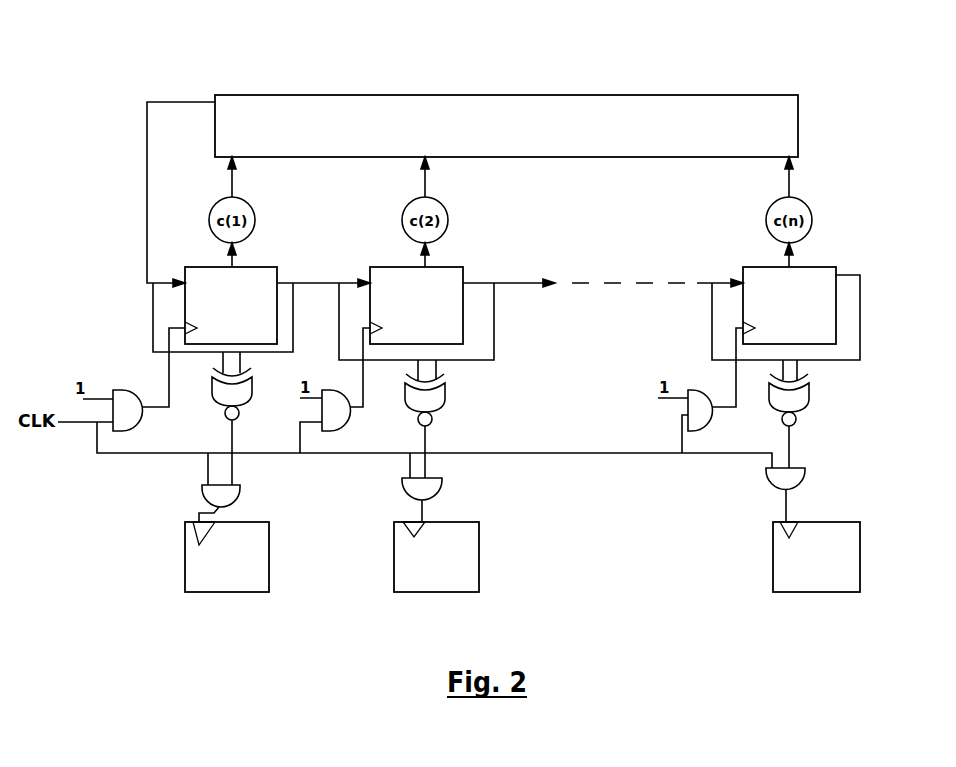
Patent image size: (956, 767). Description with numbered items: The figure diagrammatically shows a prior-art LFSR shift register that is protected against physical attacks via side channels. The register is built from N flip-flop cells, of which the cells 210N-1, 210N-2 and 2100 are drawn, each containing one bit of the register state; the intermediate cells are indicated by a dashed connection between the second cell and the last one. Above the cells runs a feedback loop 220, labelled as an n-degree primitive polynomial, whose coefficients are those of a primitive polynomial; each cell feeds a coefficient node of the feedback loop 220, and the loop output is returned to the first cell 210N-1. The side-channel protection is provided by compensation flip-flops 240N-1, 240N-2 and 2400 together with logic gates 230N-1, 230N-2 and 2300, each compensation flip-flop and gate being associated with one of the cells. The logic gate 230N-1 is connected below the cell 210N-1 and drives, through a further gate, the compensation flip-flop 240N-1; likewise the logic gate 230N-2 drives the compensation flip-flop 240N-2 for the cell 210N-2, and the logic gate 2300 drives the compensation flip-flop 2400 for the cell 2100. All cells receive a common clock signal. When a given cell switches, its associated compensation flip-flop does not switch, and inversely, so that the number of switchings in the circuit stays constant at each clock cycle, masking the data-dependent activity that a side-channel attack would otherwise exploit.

The feedback loop 220 is at (512, 95).
The cell 210N-1 is at (267, 267).
The cell 210N-2 is at (458, 267).
The cell 2100 is at (813, 267).
The logic gate 230N-1 is at (247, 398).
The logic gate 230N-2 is at (445, 396).
The logic gate 2300 is at (810, 398).
The compensation flip-flop 240N-1 is at (269, 538).
The compensation flip-flop 240N-2 is at (479, 538).
The compensation flip-flop 2400 is at (837, 522).